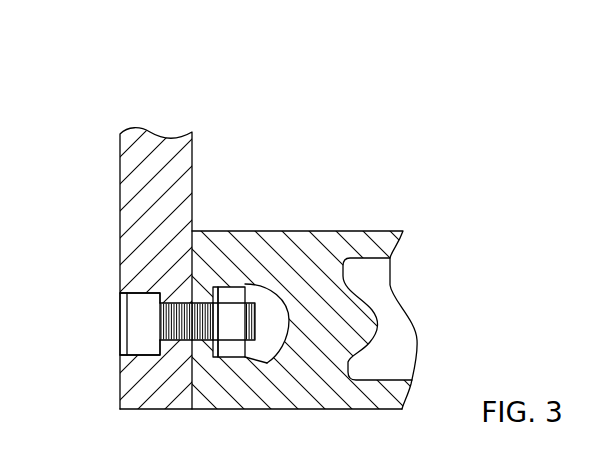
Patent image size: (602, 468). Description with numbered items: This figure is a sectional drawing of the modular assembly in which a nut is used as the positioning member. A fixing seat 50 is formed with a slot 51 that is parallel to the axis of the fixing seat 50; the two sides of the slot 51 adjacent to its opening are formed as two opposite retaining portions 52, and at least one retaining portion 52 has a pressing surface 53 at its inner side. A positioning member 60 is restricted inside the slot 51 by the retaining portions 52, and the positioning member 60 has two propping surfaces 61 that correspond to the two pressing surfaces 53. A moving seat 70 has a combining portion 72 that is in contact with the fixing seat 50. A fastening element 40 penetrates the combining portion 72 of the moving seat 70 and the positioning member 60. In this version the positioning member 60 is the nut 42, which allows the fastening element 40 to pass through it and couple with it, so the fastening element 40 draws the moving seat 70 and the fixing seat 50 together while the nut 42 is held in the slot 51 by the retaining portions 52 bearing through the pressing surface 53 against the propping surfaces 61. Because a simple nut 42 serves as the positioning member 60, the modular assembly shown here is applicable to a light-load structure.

The moving seat 70 is at (127, 120).
The fixing seat 50 is at (297, 214).
The slot 51 is at (284, 303).
The nut 42 is at (278, 286).
The propping surfaces 61 is at (242, 286).
The retaining portions 52 is at (214, 297).
The pressing surface 53 is at (210, 294).
The combining portion 72 is at (170, 360).
The fastening element 40 is at (142, 324).
The positioning member 60 is at (249, 347).